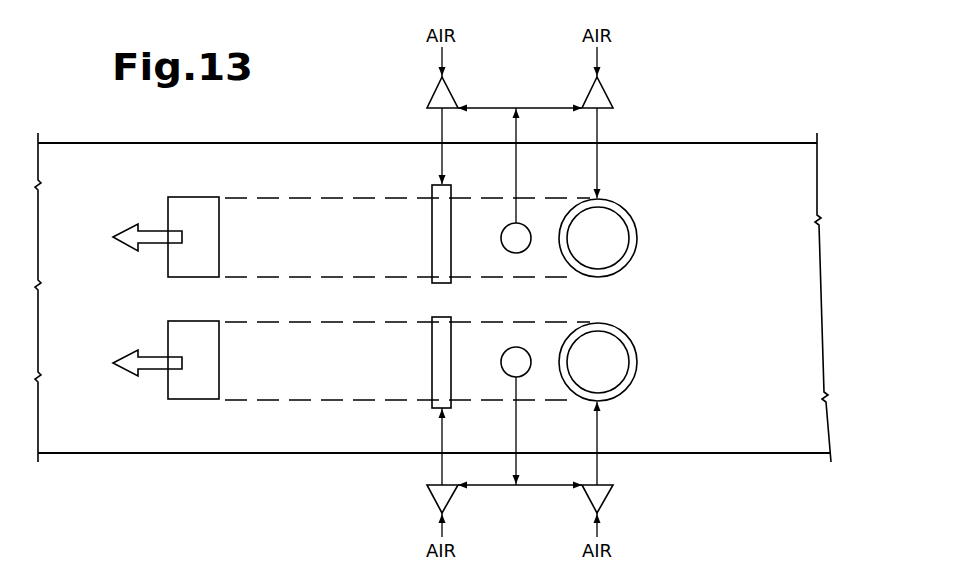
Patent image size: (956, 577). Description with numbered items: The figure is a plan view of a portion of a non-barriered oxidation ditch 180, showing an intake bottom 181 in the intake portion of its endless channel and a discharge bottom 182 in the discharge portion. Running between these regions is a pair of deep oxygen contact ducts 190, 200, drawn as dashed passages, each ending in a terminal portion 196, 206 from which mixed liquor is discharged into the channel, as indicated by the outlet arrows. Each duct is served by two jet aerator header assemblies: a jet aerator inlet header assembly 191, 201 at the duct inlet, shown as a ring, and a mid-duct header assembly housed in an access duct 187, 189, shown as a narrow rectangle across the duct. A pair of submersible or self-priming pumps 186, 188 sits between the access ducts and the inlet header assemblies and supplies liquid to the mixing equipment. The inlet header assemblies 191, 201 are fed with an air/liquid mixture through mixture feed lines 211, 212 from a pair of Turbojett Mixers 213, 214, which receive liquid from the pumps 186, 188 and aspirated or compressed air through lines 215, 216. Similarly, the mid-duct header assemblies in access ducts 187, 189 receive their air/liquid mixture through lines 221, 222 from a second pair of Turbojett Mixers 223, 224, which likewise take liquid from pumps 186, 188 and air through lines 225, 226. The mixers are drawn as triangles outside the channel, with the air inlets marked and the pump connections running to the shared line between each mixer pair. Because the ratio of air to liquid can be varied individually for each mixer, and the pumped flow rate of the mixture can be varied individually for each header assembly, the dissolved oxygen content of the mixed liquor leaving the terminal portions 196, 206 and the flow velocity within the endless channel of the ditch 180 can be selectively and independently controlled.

The non-barriered oxidation ditch 180 is at (677, 116).
The intake bottom 181 is at (737, 283).
The discharge bottom 182 is at (115, 303).
The submersible or self-priming pump 186 is at (504, 352).
The access duct 187 is at (452, 321).
The submersible or self-priming pump 188 is at (501, 246).
The access duct 189 is at (452, 188).
The deep oxygen contact duct 190 is at (353, 403).
The jet aerator inlet header assembly 191 is at (624, 388).
The terminal portion 196 is at (194, 400).
The deep oxygen contact duct 200 is at (352, 197).
The jet aerator inlet header assembly 201 is at (622, 208).
The terminal portion 206 is at (192, 197).
The mixture feed line 211 is at (600, 470).
The mixture feed line 212 is at (600, 132).
The Turbojett Mixer 213 is at (603, 498).
The Turbojett Mixer 214 is at (613, 100).
The air line 215 is at (600, 530).
The air line 216 is at (598, 62).
The mixture feed line 221 is at (440, 470).
The mixture feed line 222 is at (442, 132).
The Turbojett Mixer 223 is at (436, 498).
The Turbojett Mixer 224 is at (428, 100).
The air line 225 is at (440, 530).
The air line 226 is at (442, 60).